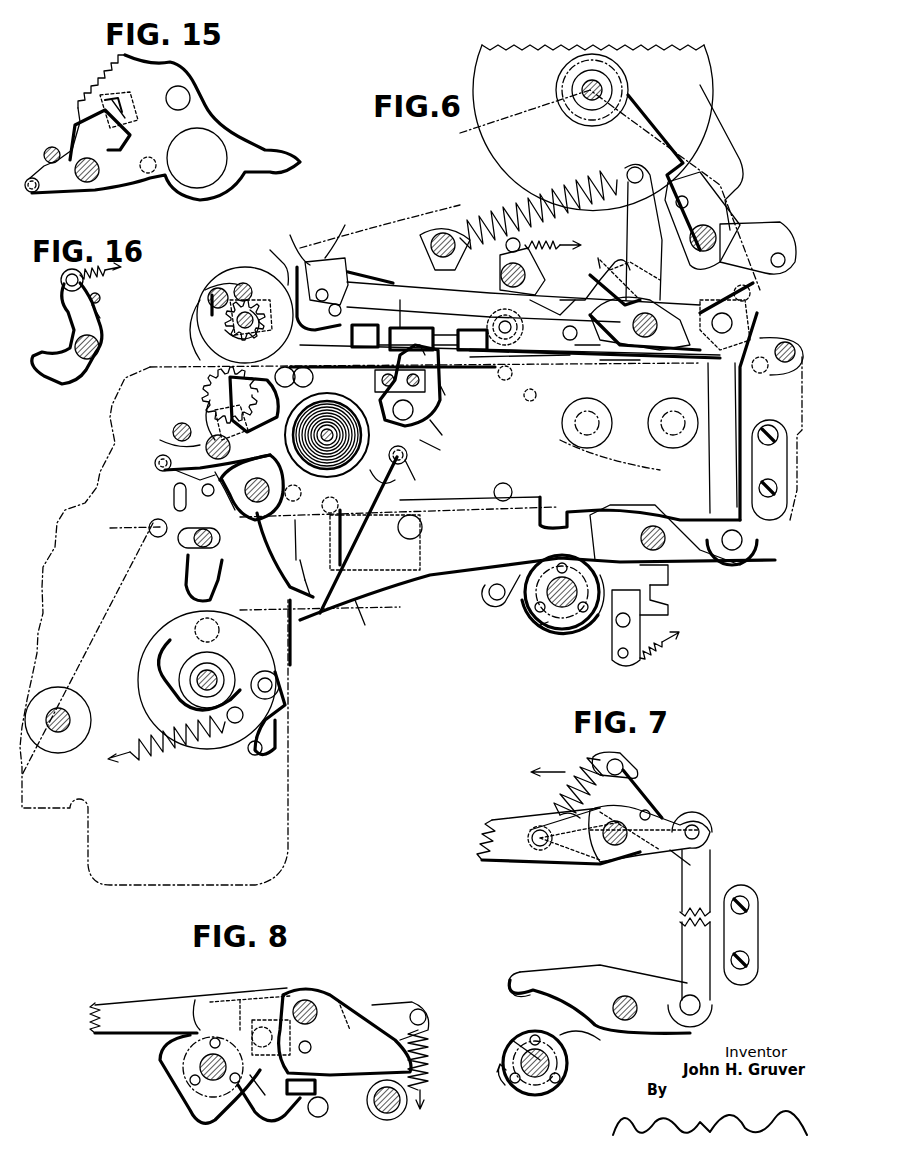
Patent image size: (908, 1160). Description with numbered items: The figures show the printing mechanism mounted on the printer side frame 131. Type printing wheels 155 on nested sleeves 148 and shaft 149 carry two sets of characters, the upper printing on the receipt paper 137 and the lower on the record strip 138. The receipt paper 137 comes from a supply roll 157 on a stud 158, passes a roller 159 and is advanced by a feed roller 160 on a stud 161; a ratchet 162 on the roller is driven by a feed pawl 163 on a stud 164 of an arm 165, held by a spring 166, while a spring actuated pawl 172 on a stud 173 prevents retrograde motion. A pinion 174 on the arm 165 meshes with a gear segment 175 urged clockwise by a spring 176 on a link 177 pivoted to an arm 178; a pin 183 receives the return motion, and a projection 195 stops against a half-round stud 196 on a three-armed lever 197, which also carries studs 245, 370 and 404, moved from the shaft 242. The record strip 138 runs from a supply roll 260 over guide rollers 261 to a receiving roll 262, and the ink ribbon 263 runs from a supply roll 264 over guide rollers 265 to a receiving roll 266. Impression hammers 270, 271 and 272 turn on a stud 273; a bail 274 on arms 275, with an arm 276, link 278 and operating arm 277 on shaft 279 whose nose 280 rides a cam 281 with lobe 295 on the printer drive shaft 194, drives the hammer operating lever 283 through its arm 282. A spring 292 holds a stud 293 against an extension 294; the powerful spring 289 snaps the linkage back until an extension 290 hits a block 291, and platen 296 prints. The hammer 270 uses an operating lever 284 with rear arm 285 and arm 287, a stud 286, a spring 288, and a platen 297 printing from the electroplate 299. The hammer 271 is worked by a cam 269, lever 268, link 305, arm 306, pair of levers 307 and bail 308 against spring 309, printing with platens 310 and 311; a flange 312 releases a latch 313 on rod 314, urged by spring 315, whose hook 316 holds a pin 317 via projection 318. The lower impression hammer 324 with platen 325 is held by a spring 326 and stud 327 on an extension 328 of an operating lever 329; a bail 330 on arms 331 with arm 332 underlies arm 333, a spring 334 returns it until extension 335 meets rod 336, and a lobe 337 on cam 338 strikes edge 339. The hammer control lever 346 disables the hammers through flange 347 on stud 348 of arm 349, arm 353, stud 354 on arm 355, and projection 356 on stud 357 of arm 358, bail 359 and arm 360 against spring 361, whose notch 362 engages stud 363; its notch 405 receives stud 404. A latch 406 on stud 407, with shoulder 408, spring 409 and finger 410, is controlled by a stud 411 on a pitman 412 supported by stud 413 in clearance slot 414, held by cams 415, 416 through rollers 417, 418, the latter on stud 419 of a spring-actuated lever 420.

In FIG. 6, the printer side frame 131 is at (85, 492).
In FIG. 6, the receipt paper 137 is at (712, 122).
In FIG. 6, the record strip 138 is at (112, 569).
In FIG. 6, the nested sleeves 148 is at (393, 410).
In FIG. 6, the shaft 149 is at (375, 385).
In FIG. 6, the type printing wheels 155 is at (375, 500).
In FIG. 6, the supply roll 157 is at (702, 82).
In FIG. 6, the stud 158 is at (604, 88).
In FIG. 6, the roller 159 is at (712, 340).
In FIG. 6, the feed roller 160 is at (260, 295).
In FIG. 6, the stud 161 is at (232, 336).
In FIG. 6, the ratchet 162 is at (264, 294).
In FIG. 6, the feed pawl 163 is at (224, 290).
In FIG. 6, the stud 164 is at (210, 290).
In FIG. 6, the arm 165 is at (200, 330).
In FIG. 6, the spring 166 is at (208, 306).
In FIG. 6, the spring actuated pawl 172 is at (266, 262).
In FIG. 6, the stud 173 is at (244, 283).
In FIG. 6, the pinion 174 is at (266, 322).
In FIG. 15, the gear segment 175 is at (186, 92).
In FIG. 6, the gear segment 175 is at (208, 400).
In FIG. 6, the spring 176 is at (160, 757).
In FIG. 6, the link 177 is at (290, 652).
In FIG. 6, the arm 178 is at (438, 448).
In FIG. 15, the pin 183 is at (186, 100).
In FIG. 6, the pin 183 is at (284, 367).
In FIG. 6, the printer drive shaft 194 is at (576, 580).
In FIG. 7, the printer drive shaft 194 is at (556, 1060).
In FIG. 8, the printer drive shaft 194 is at (190, 1105).
In FIG. 15, the projection 195 is at (100, 115).
In FIG. 6, the projection 195 is at (215, 415).
In FIG. 15, the half-round stud 196 is at (105, 100).
In FIG. 6, the half-round stud 196 is at (228, 383).
In FIG. 15, the three-armed lever 197 is at (72, 155).
In FIG. 6, the three-armed lever 197 is at (166, 440).
In FIG. 15, the shaft 242 is at (93, 184).
In FIG. 6, the shaft 242 is at (170, 462).
In FIG. 15, the stud 245 is at (30, 194).
In FIG. 6, the stud 245 is at (154, 465).
In FIG. 6, the supply roll 260 is at (165, 630).
In FIG. 6, the guide rollers 261 is at (423, 520).
In FIG. 6, the receiving roll 262 is at (55, 710).
In FIG. 6, the ink ribbon 263 is at (606, 402).
In FIG. 6, the supply roll 264 is at (650, 437).
In FIG. 6, the guide rollers 265 is at (540, 396).
In FIG. 6, the receiving roll 266 is at (614, 456).
In FIG. 6, the lever 268 is at (632, 505).
In FIG. 6, the cam 269 is at (606, 650).
In FIG. 8, the cam 269 is at (250, 1100).
In FIG. 6, the impression hammer 270 is at (545, 357).
In FIG. 6, the impression hammer 271 is at (498, 376).
In FIG. 6, the impression hammer 272 is at (365, 268).
In FIG. 7, the impression hammer 272 is at (485, 838).
In FIG. 6, the stud 273 is at (645, 340).
In FIG. 7, the stud 273 is at (615, 845).
In FIG. 6, the bail 274 is at (742, 238).
In FIG. 7, the bail 274 is at (672, 808).
In FIG. 7, the arms 275 is at (650, 782).
In FIG. 7, the arm 276 is at (670, 856).
In FIG. 7, the operating arm 277 is at (650, 995).
In FIG. 7, the link 278 is at (681, 905).
In FIG. 6, the shaft 279 is at (660, 525).
In FIG. 7, the shaft 279 is at (626, 995).
In FIG. 8, the shaft 279 is at (310, 998).
In FIG. 7, the nose 280 is at (518, 970).
In FIG. 7, the cam 281 is at (520, 1040).
In FIG. 7, the arm 282 is at (700, 830).
In FIG. 7, the hammer operating lever 283 is at (590, 790).
In FIG. 6, the operating lever 284 is at (658, 244).
In FIG. 6, the rear arm 285 is at (712, 352).
In FIG. 6, the stud 286 is at (562, 310).
In FIG. 6, the arm 287 is at (620, 362).
In FIG. 6, the spring 288 is at (614, 290).
In FIG. 7, the spring 289 is at (562, 762).
In FIG. 7, the extension 290 is at (722, 1000).
In FIG. 6, the block 291 is at (790, 525).
In FIG. 7, the block 291 is at (750, 932).
In FIG. 7, the spring 292 is at (560, 814).
In FIG. 7, the stud 293 is at (535, 850).
In FIG. 7, the extension 294 is at (545, 860).
In FIG. 7, the lobe 295 is at (605, 1042).
In FIG. 6, the impression platen 296 is at (332, 280).
In FIG. 6, the impression platen 297 is at (365, 330).
In FIG. 6, the electroplate 299 is at (442, 412).
In FIG. 6, the link 305 is at (730, 408).
In FIG. 6, the arm 306 is at (712, 270).
In FIG. 6, the pair of levers 307 is at (594, 350).
In FIG. 6, the bail 308 is at (619, 256).
In FIG. 6, the spring 309 is at (572, 188).
In FIG. 6, the platen 310 is at (440, 350).
In FIG. 6, the platen 311 is at (497, 322).
In FIG. 6, the flange 312 is at (553, 295).
In FIG. 6, the latch 313 is at (503, 269).
In FIG. 6, the rod 314 is at (503, 285).
In FIG. 6, the spring 315 is at (560, 246).
In FIG. 6, the hook 316 is at (495, 352).
In FIG. 6, the pin 317 is at (565, 337).
In FIG. 6, the projection 318 is at (548, 280).
In FIG. 6, the impression hammer 324 is at (540, 497).
In FIG. 8, the impression hammer 324 is at (118, 1003).
In FIG. 6, the platen 325 is at (332, 520).
In FIG. 8, the spring 326 is at (262, 1027).
In FIG. 8, the stud 327 is at (225, 998).
In FIG. 8, the extension 328 is at (243, 995).
In FIG. 8, the impression hammer operating lever 329 is at (318, 1088).
In FIG. 8, the bail 330 is at (345, 1060).
In FIG. 8, the arms 331 is at (340, 998).
In FIG. 8, the arm 332 is at (360, 1005).
In FIG. 8, the arm 333 is at (422, 1010).
In FIG. 8, the spring 334 is at (428, 1047).
In FIG. 8, the extension 335 is at (428, 1072).
In FIG. 8, the rod 336 is at (400, 1115).
In FIG. 8, the lobe 337 is at (195, 1000).
In FIG. 8, the cam 338 is at (160, 1060).
In FIG. 8, the edge 339 is at (255, 1125).
In FIG. 6, the hammer control lever 346 is at (283, 560).
In FIG. 6, the flange 347 is at (310, 575).
In FIG. 6, the stud 348 is at (308, 556).
In FIG. 6, the arm 349 is at (308, 588).
In FIG. 6, the arm 353 is at (338, 240).
In FIG. 6, the stud 354 is at (390, 348).
In FIG. 6, the arm 355 is at (305, 238).
In FIG. 6, the projection 356 is at (378, 476).
In FIG. 6, the stud 357 is at (412, 478).
In FIG. 6, the arm 358 is at (408, 460).
In FIG. 6, the bail 359 is at (440, 430).
In FIG. 6, the arm 360 is at (442, 396).
In FIG. 6, the spring 361 is at (435, 240).
In FIG. 6, the notch 362 is at (398, 322).
In FIG. 6, the stud 363 is at (425, 306).
In FIG. 15, the stud 370 is at (44, 157).
In FIG. 6, the stud 370 is at (173, 425).
In FIG. 15, the stud 404 is at (147, 175).
In FIG. 16, the stud 404 is at (101, 300).
In FIG. 6, the stud 404 is at (300, 490).
In FIG. 6, the notch 405 is at (224, 440).
In FIG. 16, the latch 406 is at (69, 314).
In FIG. 6, the latch 406 is at (228, 552).
In FIG. 16, the stud 407 is at (75, 345).
In FIG. 6, the stud 407 is at (250, 505).
In FIG. 16, the shoulder 408 is at (100, 312).
In FIG. 16, the spring 409 is at (103, 276).
In FIG. 16, the finger 410 is at (52, 372).
In FIG. 6, the finger 410 is at (190, 500).
In FIG. 6, the stud 411 is at (200, 480).
In FIG. 6, the pitman 412 is at (362, 612).
In FIG. 6, the stud 413 is at (200, 548).
In FIG. 6, the clearance slot 414 is at (185, 545).
In FIG. 6, the cam 415 is at (528, 635).
In FIG. 6, the cam 416 is at (550, 640).
In FIG. 6, the roller 417 is at (495, 605).
In FIG. 6, the roller 418 is at (655, 585).
In FIG. 6, the stud 419 is at (655, 605).
In FIG. 6, the spring-actuated lever 420 is at (671, 632).